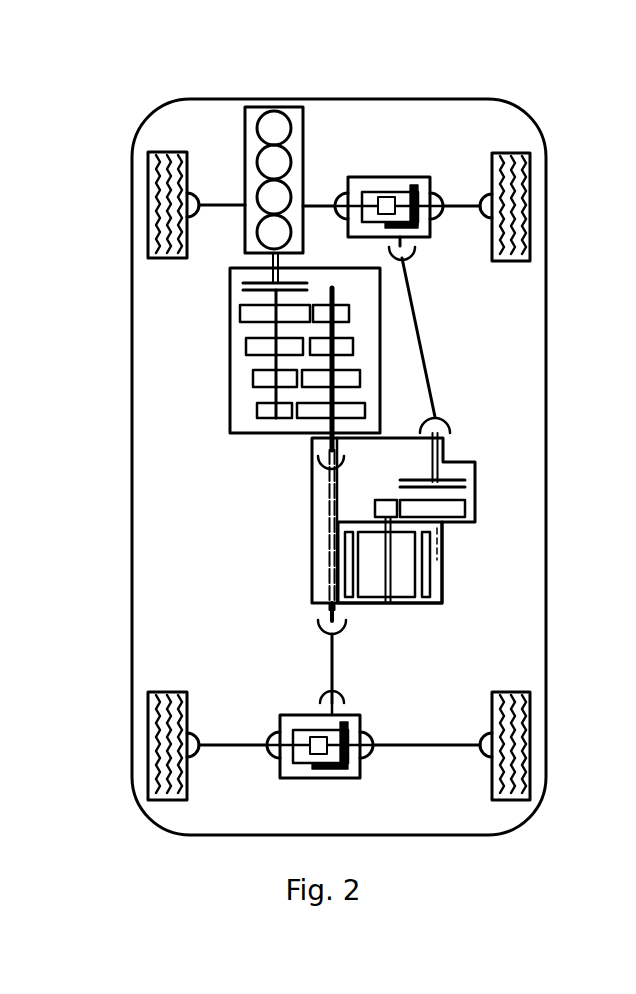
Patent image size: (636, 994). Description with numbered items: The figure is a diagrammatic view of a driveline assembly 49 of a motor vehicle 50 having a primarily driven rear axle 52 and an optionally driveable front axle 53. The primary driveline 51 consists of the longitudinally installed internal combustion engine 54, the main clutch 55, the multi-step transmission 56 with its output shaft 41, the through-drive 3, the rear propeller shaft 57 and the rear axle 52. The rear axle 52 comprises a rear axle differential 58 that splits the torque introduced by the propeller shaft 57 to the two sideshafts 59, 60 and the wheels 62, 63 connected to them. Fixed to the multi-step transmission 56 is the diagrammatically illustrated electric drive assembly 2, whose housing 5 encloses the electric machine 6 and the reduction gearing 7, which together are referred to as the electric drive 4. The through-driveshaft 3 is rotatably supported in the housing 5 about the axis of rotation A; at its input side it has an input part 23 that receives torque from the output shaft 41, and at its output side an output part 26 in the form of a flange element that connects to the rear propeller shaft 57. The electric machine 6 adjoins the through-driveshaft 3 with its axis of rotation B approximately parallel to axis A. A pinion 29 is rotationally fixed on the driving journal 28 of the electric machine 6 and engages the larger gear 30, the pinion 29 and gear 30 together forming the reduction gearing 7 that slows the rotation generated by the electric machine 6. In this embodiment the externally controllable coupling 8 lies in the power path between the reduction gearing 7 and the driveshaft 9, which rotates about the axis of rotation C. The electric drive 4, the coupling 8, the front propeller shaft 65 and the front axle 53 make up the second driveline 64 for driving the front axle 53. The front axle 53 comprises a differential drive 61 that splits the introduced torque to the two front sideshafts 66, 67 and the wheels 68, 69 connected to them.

The electric drive assembly 2 is at (311, 525).
The through-driveshaft 3 is at (328, 568).
The electric drive 4 is at (380, 540).
The housing 5 is at (414, 590).
The electric machine 6 is at (443, 583).
The reduction gearing 7 is at (427, 501).
The coupling 8 is at (468, 483).
The driveshaft 9 is at (447, 432).
The input part 23 is at (309, 477).
The output part 26 is at (330, 612).
The driving journal 28 is at (390, 582).
The pinion 29 is at (375, 505).
The gear 30 is at (460, 508).
The output shaft 41 is at (307, 452).
The driveline assembly 49 is at (327, 124).
The motor vehicle 50 is at (392, 97).
The primary driveline 51 is at (268, 390).
The rear axle 52 is at (347, 741).
The front axle 53 is at (348, 191).
The internal combustion engine 54 is at (260, 105).
The main clutch 55 is at (242, 287).
The multi-step transmission 56 is at (232, 332).
The rear propeller shaft 57 is at (325, 657).
The rear axle differential 58 is at (358, 716).
The sideshaft 59 is at (427, 745).
The sideshaft 60 is at (228, 742).
The differential drive 61 is at (388, 176).
The wheel 62 is at (530, 712).
The wheel 63 is at (148, 716).
The second driveline 64 is at (464, 337).
The front propeller shaft 65 is at (418, 327).
The front sideshaft 66 is at (460, 203).
The front sideshaft 67 is at (213, 197).
The wheel 68 is at (530, 168).
The wheel 69 is at (150, 185).
The axis of rotation A is at (342, 627).
The axis of rotation B is at (403, 600).
The axis of rotation C is at (434, 382).